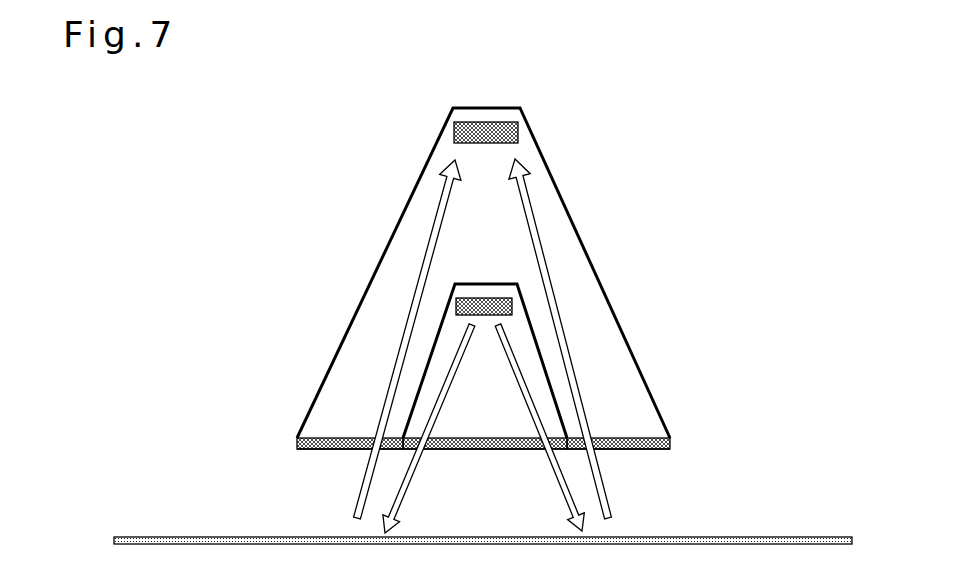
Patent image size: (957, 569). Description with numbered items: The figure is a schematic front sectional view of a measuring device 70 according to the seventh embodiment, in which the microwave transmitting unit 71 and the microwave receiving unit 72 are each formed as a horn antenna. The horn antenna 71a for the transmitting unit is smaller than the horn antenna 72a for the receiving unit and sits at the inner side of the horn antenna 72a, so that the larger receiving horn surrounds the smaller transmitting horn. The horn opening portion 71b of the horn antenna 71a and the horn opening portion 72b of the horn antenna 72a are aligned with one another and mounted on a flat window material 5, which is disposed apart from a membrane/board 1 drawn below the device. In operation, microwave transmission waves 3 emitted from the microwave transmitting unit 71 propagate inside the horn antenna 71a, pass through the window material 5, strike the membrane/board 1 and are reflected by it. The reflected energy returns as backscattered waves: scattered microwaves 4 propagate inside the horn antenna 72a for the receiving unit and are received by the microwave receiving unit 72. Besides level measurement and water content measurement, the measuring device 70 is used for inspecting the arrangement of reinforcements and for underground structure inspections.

The measuring device 70 is at (240, 167).
The horn antenna for the receiving unit 72a is at (418, 183).
The horn opening portion of the horn antenna for the receiving unit 72b is at (355, 438).
The microwave receiving unit 72 is at (490, 122).
The horn antenna for the transmitting unit 71a is at (443, 308).
The horn opening portion of the horn antenna for the transmitting unit 71b is at (497, 438).
The microwave transmitting unit 71 is at (488, 298).
The window material 5 is at (320, 450).
The scattered microwaves 4 is at (406, 333).
The microwave transmission waves 3 is at (413, 472).
The membrane/board 1 is at (783, 537).